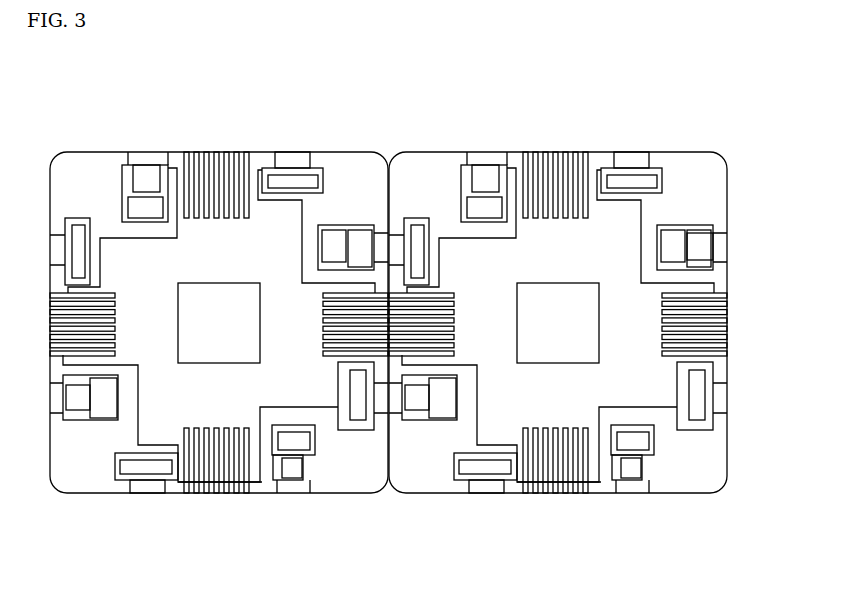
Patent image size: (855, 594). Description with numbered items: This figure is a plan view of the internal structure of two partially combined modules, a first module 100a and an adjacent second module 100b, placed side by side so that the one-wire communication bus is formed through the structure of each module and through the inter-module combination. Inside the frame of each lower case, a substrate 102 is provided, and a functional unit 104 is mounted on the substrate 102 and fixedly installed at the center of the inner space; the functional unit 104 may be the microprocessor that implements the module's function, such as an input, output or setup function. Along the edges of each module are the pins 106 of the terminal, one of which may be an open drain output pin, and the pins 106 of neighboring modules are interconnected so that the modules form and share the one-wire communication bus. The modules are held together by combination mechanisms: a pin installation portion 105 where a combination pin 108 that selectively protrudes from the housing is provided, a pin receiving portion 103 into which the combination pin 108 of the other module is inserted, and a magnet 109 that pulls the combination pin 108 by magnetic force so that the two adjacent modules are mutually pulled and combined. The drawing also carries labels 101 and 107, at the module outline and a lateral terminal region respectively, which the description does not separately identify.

The first module 100a is at (219, 317).
The second module 100b is at (562, 329).
The substrate 101 is at (703, 170).
The substrate 102 is at (670, 392).
The pin receiving portion 103 is at (650, 167).
The functional unit 104 is at (600, 316).
The pin installation portion 105 is at (437, 425).
The pins of the terminal 106 is at (697, 252).
The comb connector 107 is at (522, 478).
The combination pin 108 is at (698, 226).
The magnet 109 is at (350, 432).